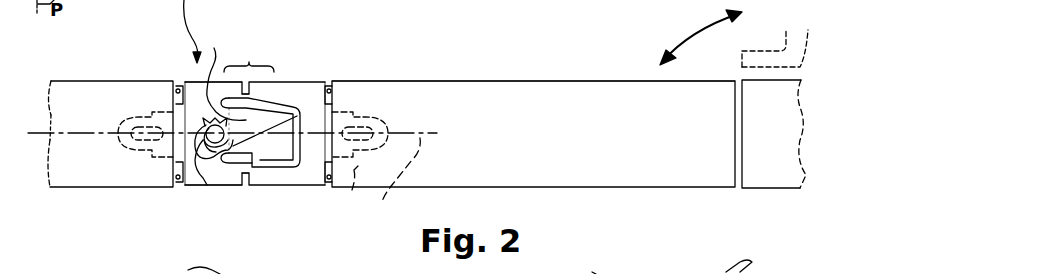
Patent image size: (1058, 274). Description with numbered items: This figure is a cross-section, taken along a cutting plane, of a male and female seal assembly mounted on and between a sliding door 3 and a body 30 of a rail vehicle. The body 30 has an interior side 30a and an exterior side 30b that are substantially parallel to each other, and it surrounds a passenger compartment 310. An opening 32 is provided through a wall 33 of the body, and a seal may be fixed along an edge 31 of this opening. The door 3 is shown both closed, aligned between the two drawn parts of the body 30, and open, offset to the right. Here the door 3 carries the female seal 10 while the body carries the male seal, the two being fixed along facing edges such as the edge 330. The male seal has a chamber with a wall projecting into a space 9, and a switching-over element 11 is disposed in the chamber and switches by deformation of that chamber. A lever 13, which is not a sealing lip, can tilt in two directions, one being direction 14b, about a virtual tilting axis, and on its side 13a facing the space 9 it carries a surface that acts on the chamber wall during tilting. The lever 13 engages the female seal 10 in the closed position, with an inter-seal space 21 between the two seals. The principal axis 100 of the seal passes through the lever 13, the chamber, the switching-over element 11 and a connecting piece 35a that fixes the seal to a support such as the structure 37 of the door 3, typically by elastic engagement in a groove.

The door 3 is at (428, 108).
The space 9 is at (222, 150).
The female seal 10 is at (303, 87).
The switching-over element 11 is at (190, 183).
The lever 13 is at (270, 125).
The side of the lever facing the space 13a is at (222, 44).
The tilting direction 14b is at (180, 268).
The inter-seal space 21 is at (249, 107).
The body 30 is at (85, 117).
The interior side 30a is at (190, 82).
The exterior side 30b is at (190, 188).
The edge 31 is at (684, 268).
The opening 32 is at (533, 121).
The wall 33 is at (768, 273).
The connecting piece 35a is at (125, 145).
The structure 37 is at (357, 167).
The principal axis 100 is at (372, 0).
The passenger compartment 310 is at (560, 38).
The edge 330 is at (168, 100).